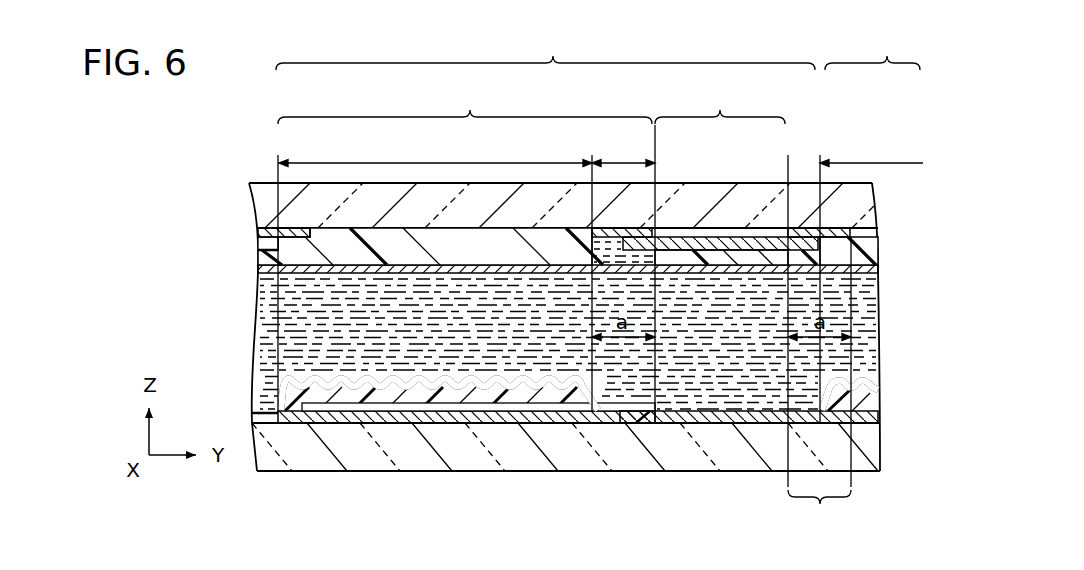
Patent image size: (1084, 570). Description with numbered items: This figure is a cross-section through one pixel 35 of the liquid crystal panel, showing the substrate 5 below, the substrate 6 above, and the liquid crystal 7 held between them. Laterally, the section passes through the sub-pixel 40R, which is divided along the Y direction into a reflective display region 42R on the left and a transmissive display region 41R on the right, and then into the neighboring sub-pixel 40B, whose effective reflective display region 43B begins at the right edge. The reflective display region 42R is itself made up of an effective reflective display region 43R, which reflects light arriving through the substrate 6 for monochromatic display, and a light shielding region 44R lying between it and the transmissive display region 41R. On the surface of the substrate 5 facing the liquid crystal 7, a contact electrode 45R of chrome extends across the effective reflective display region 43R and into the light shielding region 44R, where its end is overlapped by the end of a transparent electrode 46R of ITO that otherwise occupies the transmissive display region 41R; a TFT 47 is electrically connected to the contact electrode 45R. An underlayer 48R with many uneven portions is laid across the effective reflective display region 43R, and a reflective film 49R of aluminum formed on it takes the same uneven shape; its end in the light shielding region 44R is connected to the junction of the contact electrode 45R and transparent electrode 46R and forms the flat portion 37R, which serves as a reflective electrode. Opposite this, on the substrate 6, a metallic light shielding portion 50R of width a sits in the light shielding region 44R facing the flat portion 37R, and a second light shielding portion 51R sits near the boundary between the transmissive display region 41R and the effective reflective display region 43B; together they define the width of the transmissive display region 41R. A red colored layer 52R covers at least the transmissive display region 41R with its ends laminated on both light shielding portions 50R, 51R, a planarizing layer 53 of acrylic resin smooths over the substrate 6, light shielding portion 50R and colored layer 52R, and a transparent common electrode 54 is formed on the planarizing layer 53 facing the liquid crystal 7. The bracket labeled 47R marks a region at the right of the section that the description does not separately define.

The pixel 35 is at (219, 177).
The substrate 6 is at (268, 188).
The substrate 5 is at (267, 470).
The liquid crystal 7 is at (270, 318).
The common electrode 54 is at (390, 270).
The planarizing layer 53 is at (437, 250).
The colored layer 52R is at (720, 245).
The light shielding portion 51R is at (813, 228).
The light shielding portion 50R is at (598, 245).
The reflective film 49R is at (505, 376).
The underlayer 48R is at (437, 403).
The TFT 47 is at (337, 405).
The transparent electrode 46R is at (730, 413).
The contact electrode 45R is at (374, 426).
The flat portion 37R is at (645, 402).
The pixel electrode portion 47R is at (819, 511).
The sub-pixel 40R is at (545, 50).
The sub-pixel 40B is at (872, 50).
The reflective display region 42R is at (465, 104).
The transmissive display region 41R is at (720, 104).
The effective reflective display region 43R is at (435, 151).
The light shielding region 44R is at (623, 151).
The effective reflective display region 43B is at (871, 151).